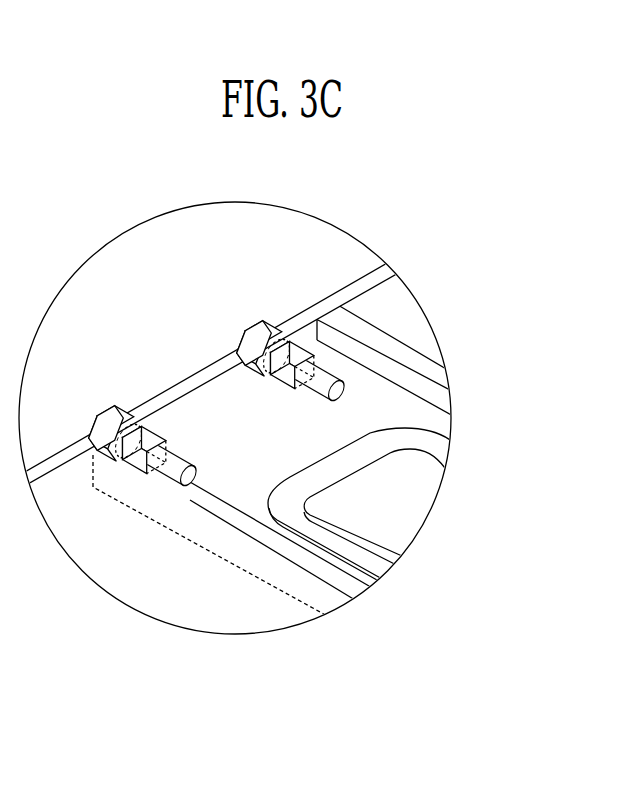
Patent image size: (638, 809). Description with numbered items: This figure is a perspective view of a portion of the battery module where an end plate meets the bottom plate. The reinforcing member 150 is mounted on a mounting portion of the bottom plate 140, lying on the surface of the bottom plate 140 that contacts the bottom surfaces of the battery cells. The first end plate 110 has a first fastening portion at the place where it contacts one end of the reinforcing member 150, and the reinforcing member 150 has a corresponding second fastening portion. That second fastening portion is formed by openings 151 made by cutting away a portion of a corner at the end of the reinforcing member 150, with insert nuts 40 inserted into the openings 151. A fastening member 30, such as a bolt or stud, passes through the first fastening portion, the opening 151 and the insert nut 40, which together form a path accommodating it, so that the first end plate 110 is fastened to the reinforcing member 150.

The fastening member 30 is at (248, 322).
The insert nut 40 is at (278, 375).
The first end plate 110 is at (330, 297).
The bottom plate 140 is at (393, 312).
The reinforcing member 150 is at (397, 403).
The opening 151 is at (192, 461).